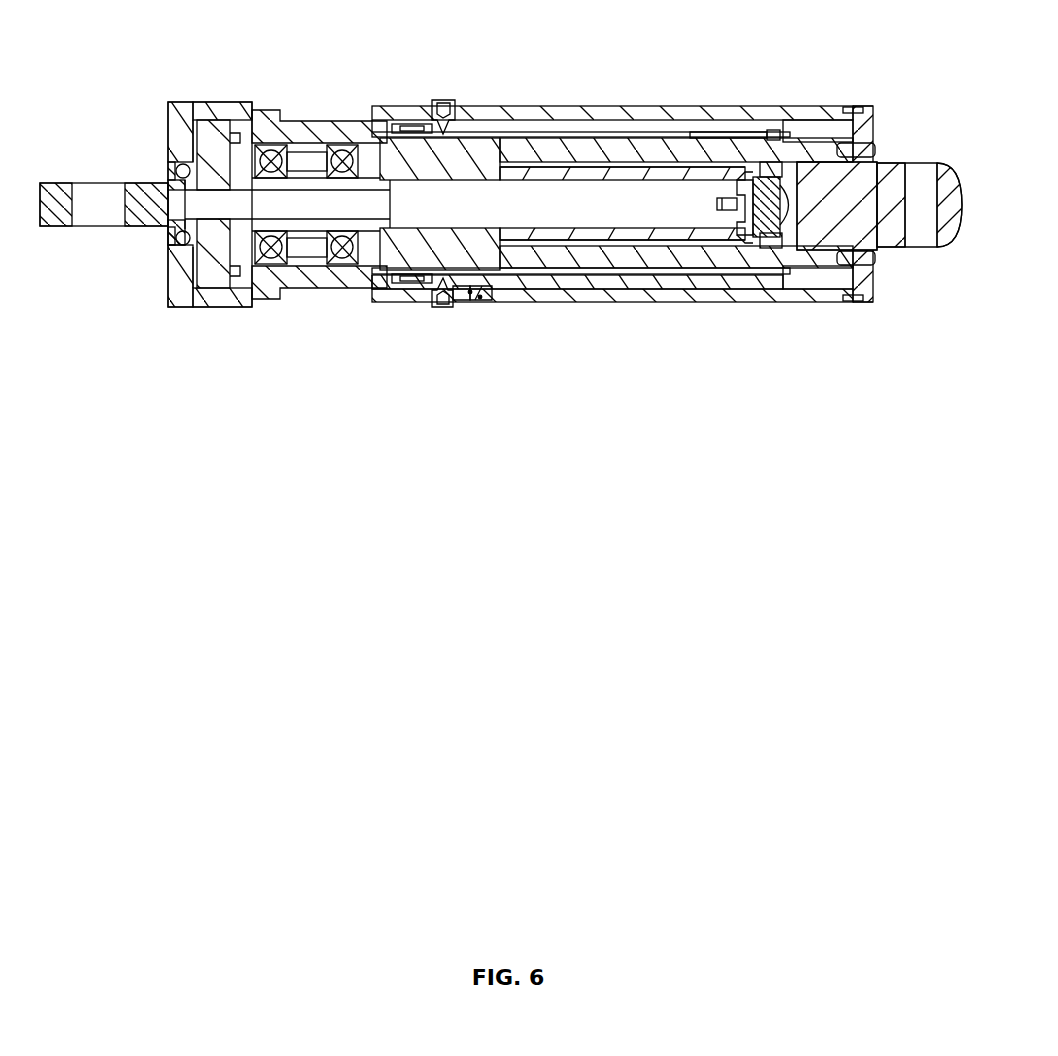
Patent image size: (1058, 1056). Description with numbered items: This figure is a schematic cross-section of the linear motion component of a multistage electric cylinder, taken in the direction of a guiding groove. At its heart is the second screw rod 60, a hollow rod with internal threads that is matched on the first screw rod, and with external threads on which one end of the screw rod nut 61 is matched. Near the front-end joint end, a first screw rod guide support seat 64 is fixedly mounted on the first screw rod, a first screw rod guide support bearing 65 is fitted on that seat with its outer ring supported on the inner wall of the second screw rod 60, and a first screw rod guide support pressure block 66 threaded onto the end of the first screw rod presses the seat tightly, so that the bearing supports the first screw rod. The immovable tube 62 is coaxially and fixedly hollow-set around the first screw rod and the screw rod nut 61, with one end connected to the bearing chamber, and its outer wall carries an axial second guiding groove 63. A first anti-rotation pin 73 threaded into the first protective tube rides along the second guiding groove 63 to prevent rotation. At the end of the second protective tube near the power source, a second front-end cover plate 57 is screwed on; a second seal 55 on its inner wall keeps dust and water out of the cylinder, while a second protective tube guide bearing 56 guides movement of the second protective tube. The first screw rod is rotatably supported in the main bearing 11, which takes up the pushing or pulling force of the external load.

The main bearing 11 is at (353, 270).
The second seal 55 is at (458, 293).
The second protective tube guide bearing 56 is at (470, 292).
The second front-end cover plate 57 is at (480, 297).
The second screw rod 60 is at (493, 236).
The screw rod nut 61 is at (553, 262).
The immovable tube 62 is at (633, 274).
The second guiding groove 63 is at (648, 240).
The first screw rod guide support seat 64 is at (723, 226).
The first screw rod guide support bearing 65 is at (732, 231).
The first screw rod guide support pressure block 66 is at (746, 204).
The first anti-rotation pin 73 is at (452, 105).